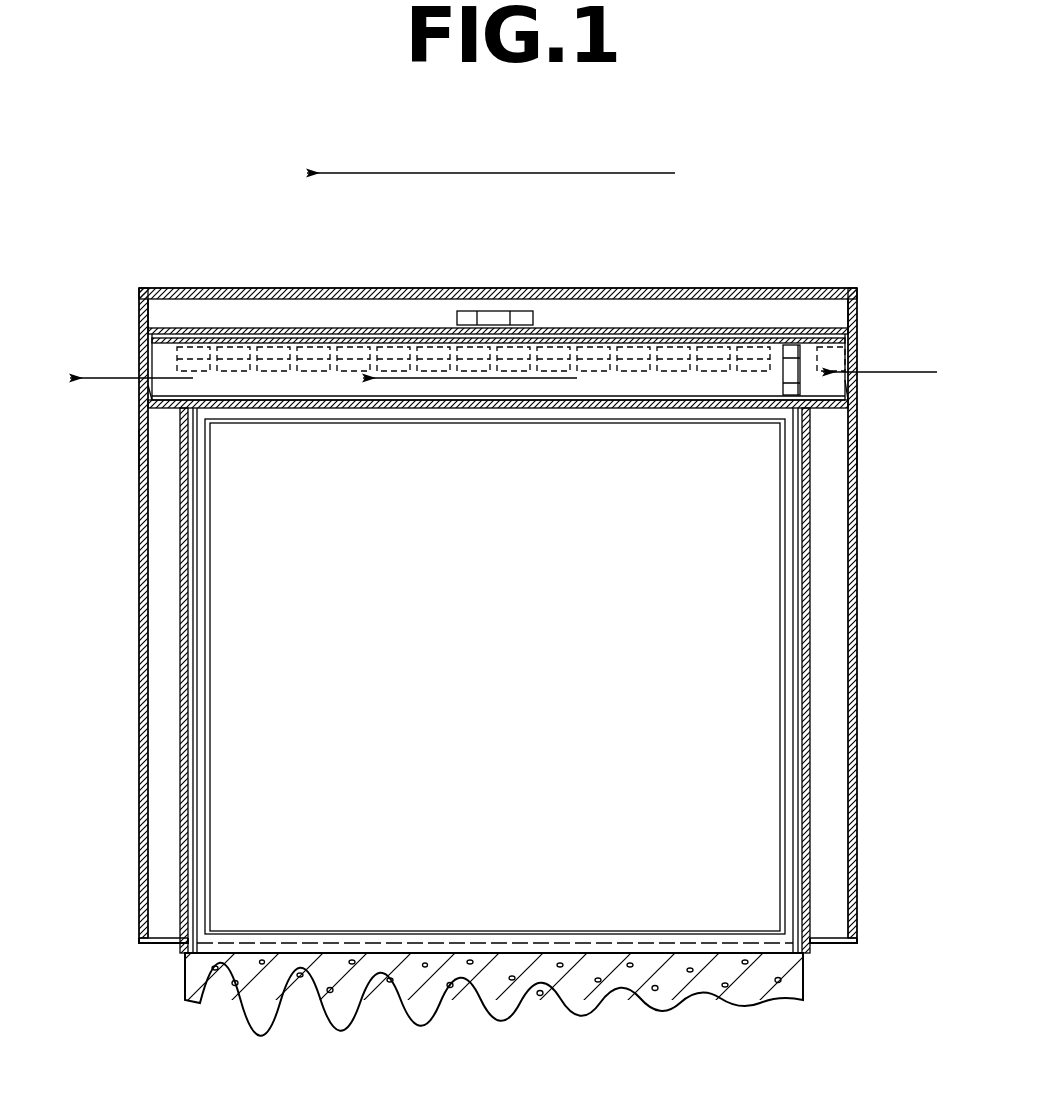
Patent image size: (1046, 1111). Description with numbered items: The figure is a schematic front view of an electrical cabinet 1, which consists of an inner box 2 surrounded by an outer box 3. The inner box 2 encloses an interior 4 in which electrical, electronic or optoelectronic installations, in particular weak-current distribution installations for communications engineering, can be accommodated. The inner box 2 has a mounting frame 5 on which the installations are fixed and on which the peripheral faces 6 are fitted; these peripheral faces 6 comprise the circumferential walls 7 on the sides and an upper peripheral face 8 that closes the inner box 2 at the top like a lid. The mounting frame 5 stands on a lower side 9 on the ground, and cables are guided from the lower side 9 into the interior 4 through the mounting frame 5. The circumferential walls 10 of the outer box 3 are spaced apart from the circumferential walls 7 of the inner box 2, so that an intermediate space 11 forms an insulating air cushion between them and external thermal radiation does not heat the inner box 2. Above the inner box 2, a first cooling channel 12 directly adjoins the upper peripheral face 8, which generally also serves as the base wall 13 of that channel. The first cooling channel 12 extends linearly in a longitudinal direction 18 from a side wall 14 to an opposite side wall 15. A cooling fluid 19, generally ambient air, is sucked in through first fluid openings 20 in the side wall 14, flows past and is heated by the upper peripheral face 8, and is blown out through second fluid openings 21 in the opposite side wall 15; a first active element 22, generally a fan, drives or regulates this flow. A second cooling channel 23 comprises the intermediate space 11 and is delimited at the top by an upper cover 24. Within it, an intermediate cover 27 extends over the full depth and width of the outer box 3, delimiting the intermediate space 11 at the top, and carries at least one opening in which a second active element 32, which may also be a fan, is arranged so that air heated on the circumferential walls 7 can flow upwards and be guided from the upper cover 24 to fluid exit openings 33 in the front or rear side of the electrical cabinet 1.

The electrical cabinet 1 is at (690, 255).
The inner box 2 is at (184, 544).
The outer box 3 is at (139, 878).
The interior 4 is at (481, 591).
The mounting frame 5 is at (205, 780).
The peripheral faces 6 is at (193, 588).
The circumferential walls 7 is at (182, 652).
The upper peripheral face 8 is at (510, 404).
The lower side 9 is at (461, 986).
The circumferential walls 10 is at (139, 772).
The intermediate space 11 is at (180, 705).
The first cooling channel 12 is at (828, 350).
The base wall 13 is at (677, 400).
The side wall 14 is at (857, 470).
The opposite side wall 15 is at (139, 448).
The longitudinal direction 18 is at (500, 173).
The cooling fluid 19 is at (127, 374).
The first fluid openings 20 is at (858, 388).
The second fluid openings 21 is at (142, 391).
The first active element 22 is at (787, 345).
The second cooling channel 23 is at (280, 312).
The upper cover 24 is at (350, 290).
The intermediate cover 27 is at (165, 328).
The second active element 32 is at (475, 312).
The fluid exit openings 33 is at (262, 352).